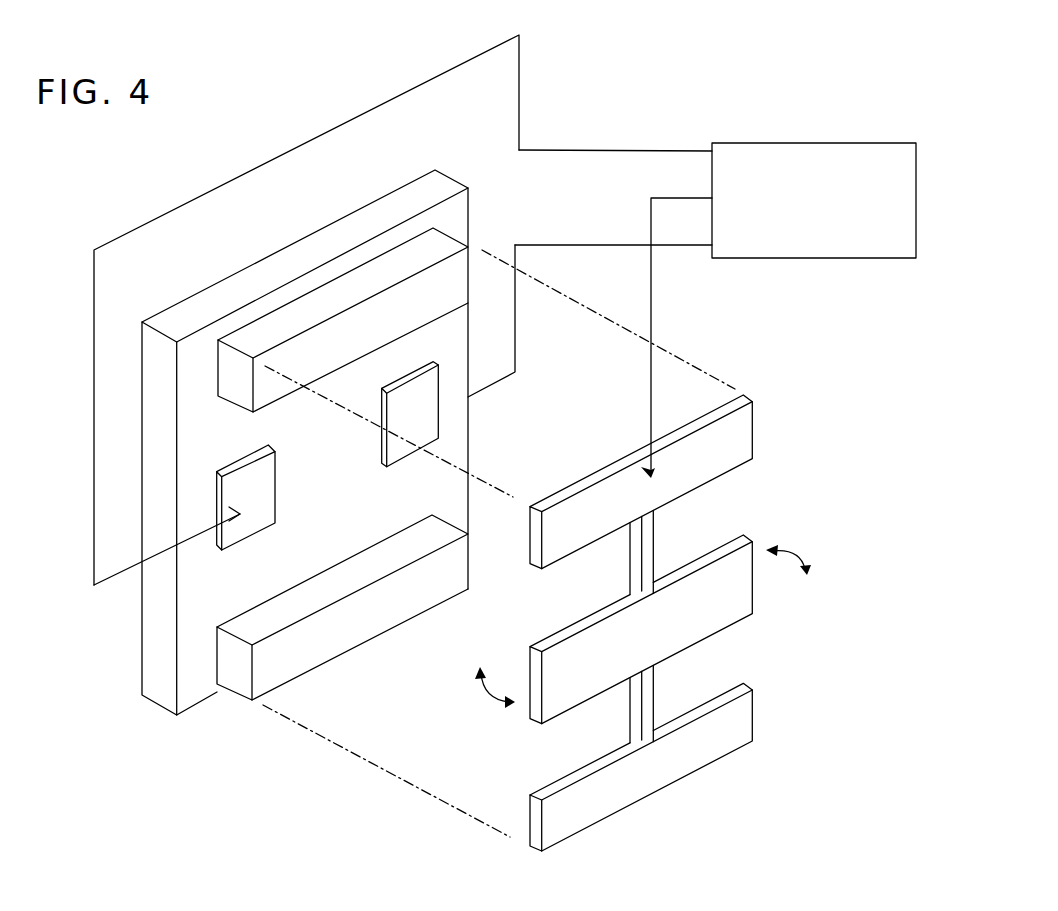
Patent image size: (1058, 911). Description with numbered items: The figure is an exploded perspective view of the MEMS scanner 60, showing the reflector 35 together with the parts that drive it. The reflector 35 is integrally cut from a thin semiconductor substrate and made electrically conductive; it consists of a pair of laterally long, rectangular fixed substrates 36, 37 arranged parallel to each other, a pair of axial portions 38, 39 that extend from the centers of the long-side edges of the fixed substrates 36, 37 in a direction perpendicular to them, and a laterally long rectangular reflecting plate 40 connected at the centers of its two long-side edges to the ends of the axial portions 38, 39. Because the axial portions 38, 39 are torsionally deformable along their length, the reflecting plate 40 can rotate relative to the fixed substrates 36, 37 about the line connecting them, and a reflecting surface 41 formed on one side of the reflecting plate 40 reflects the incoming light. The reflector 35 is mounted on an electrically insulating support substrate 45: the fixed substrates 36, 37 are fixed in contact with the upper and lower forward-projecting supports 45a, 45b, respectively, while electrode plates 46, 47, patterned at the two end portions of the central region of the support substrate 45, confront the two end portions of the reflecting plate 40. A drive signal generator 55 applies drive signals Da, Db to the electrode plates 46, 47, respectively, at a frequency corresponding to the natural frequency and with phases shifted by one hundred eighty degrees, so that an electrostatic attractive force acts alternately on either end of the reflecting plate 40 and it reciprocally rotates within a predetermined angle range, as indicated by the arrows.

The MEMS scanner 60 is at (578, 71).
The drive signal generator 55 is at (772, 142).
The drive signal Da is at (548, 150).
The drive signal Db is at (548, 245).
The support substrate 45 is at (206, 306).
The upper support 45a is at (346, 298).
The lower support 45b is at (234, 682).
The electrode plate 46 is at (237, 533).
The electrode plate 47 is at (422, 433).
The reflector 35 is at (757, 391).
The fixed substrate 36 is at (752, 405).
The fixed substrate 37 is at (752, 718).
The axial portion 38 is at (652, 540).
The axial portion 39 is at (648, 697).
The reflecting plate 40 is at (752, 542).
The reflecting surface 41 is at (677, 608).